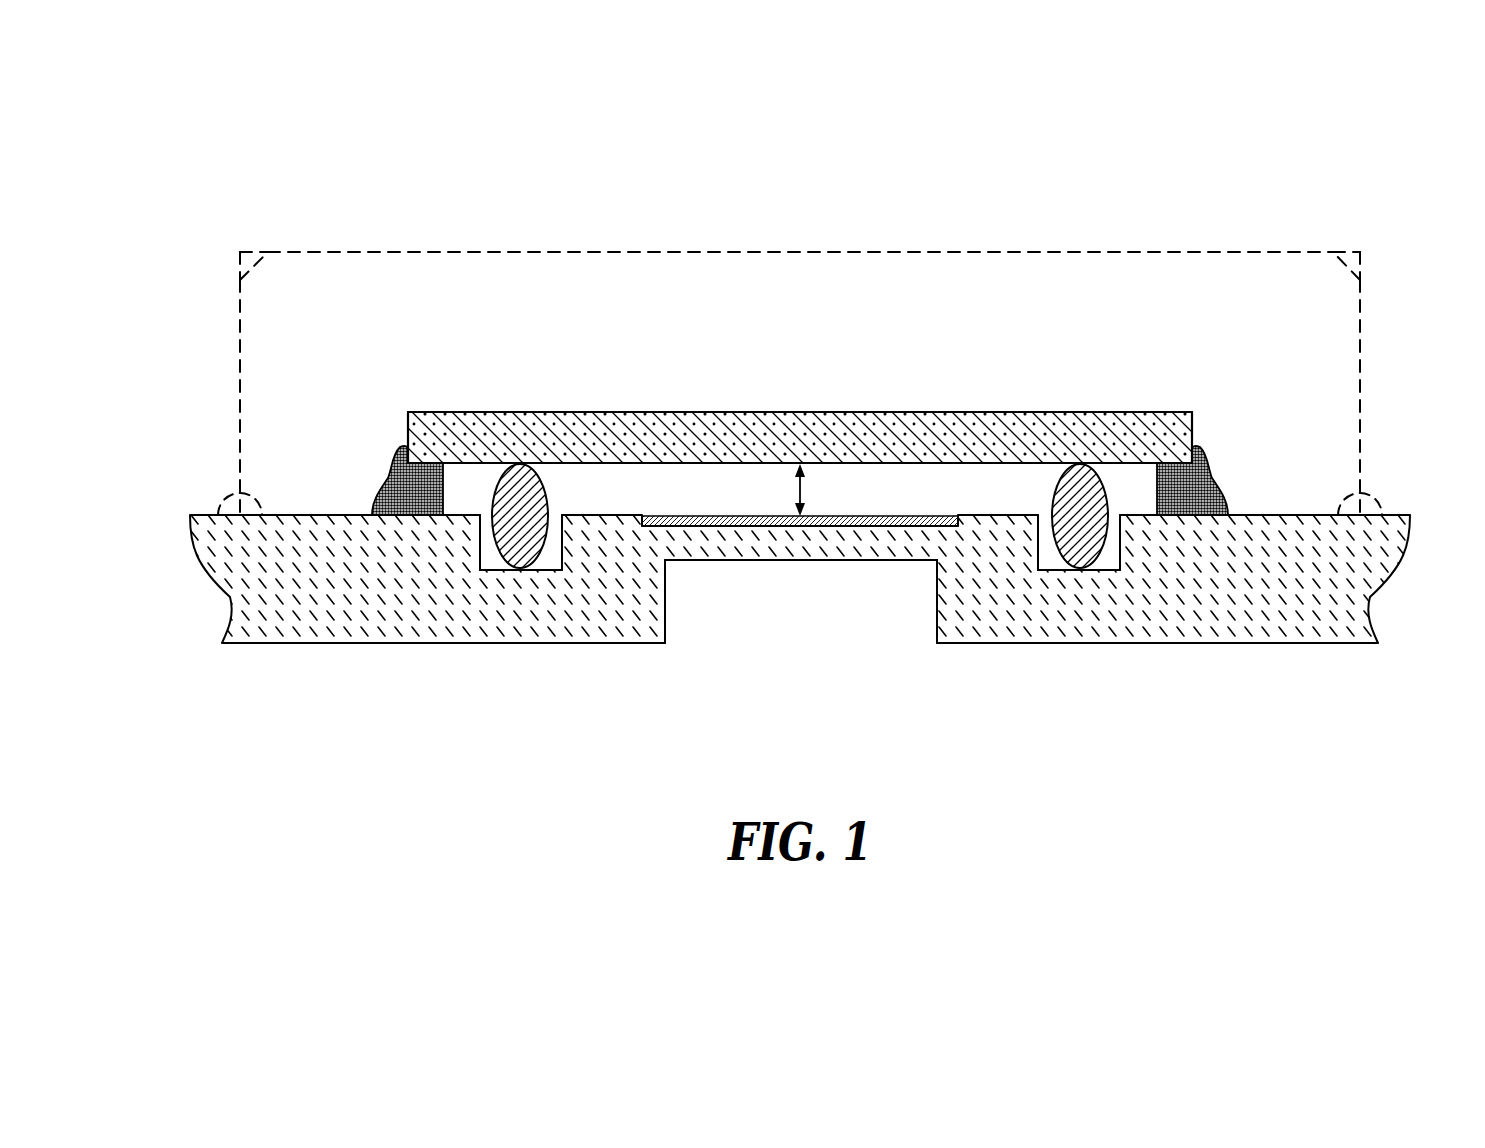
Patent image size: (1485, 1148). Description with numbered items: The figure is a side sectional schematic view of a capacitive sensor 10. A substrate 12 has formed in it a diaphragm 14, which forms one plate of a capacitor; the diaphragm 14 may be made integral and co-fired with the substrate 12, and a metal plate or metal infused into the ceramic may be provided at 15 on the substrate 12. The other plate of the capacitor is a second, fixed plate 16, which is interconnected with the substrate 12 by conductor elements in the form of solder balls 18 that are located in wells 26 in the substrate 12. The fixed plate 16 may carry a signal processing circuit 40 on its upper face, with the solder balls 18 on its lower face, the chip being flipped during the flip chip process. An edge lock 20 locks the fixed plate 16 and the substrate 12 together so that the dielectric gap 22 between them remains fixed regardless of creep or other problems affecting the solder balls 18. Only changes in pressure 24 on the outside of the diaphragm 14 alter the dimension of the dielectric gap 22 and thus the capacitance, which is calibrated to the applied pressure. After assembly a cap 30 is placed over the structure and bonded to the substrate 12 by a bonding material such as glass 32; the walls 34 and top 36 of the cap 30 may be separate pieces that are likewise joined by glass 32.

The capacitive sensor 10 is at (182, 165).
The substrate 12 is at (245, 595).
The diaphragm 14 is at (823, 540).
The metal plate 15 is at (912, 515).
The fixed plate 16 is at (737, 437).
The solder balls 18 is at (515, 543).
The edge lock 20 is at (397, 450).
The dielectric gap 22 is at (804, 491).
The pressure 24 is at (748, 558).
The wells 26 is at (548, 548).
The cap 30 is at (695, 252).
The glass 32 is at (240, 262).
The walls 34 is at (240, 362).
The top 36 is at (283, 250).
The signal processing circuit 40 is at (1017, 412).